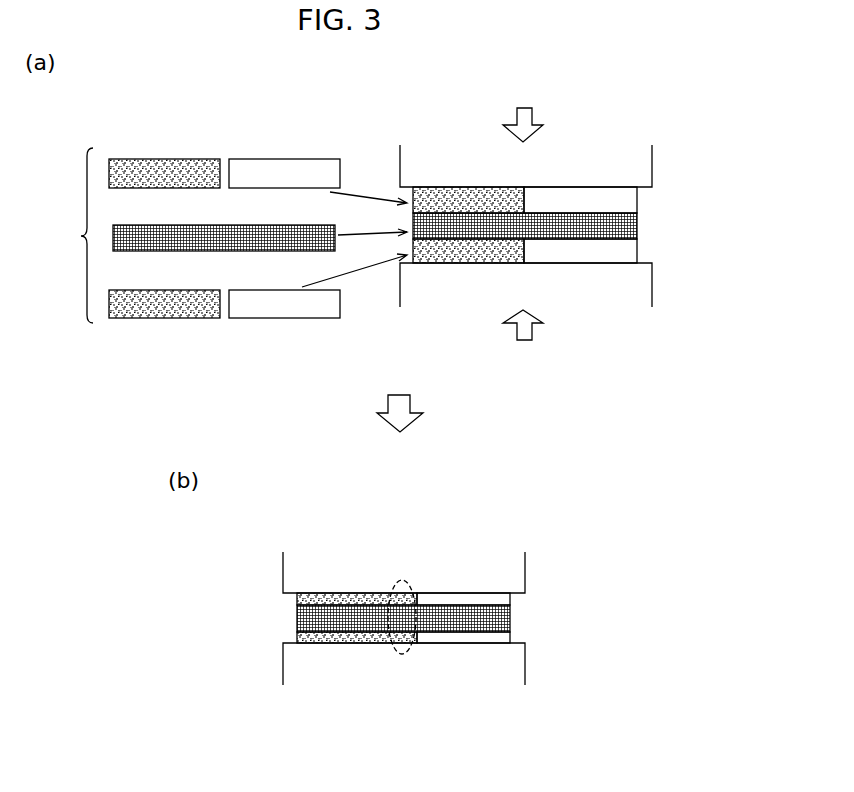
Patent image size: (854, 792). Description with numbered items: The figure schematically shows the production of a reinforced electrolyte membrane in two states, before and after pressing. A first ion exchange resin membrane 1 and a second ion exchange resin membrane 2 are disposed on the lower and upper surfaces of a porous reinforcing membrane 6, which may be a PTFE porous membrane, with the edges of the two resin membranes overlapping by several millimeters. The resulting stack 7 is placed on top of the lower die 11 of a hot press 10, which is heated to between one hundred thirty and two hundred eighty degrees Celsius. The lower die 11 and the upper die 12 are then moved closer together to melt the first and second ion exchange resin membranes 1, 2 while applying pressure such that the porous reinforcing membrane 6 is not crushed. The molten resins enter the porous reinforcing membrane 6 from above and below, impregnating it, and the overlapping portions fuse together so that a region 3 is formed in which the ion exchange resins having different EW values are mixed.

The first ion exchange resin membrane 1 is at (162, 165).
The second ion exchange resin membrane 2 is at (297, 172).
The region 3 is at (413, 582).
The porous reinforcing membrane 6 is at (165, 238).
The stack 7 is at (76, 235).
The hot press 10 is at (659, 123).
The lower die 11 is at (632, 290).
The upper die 12 is at (645, 162).